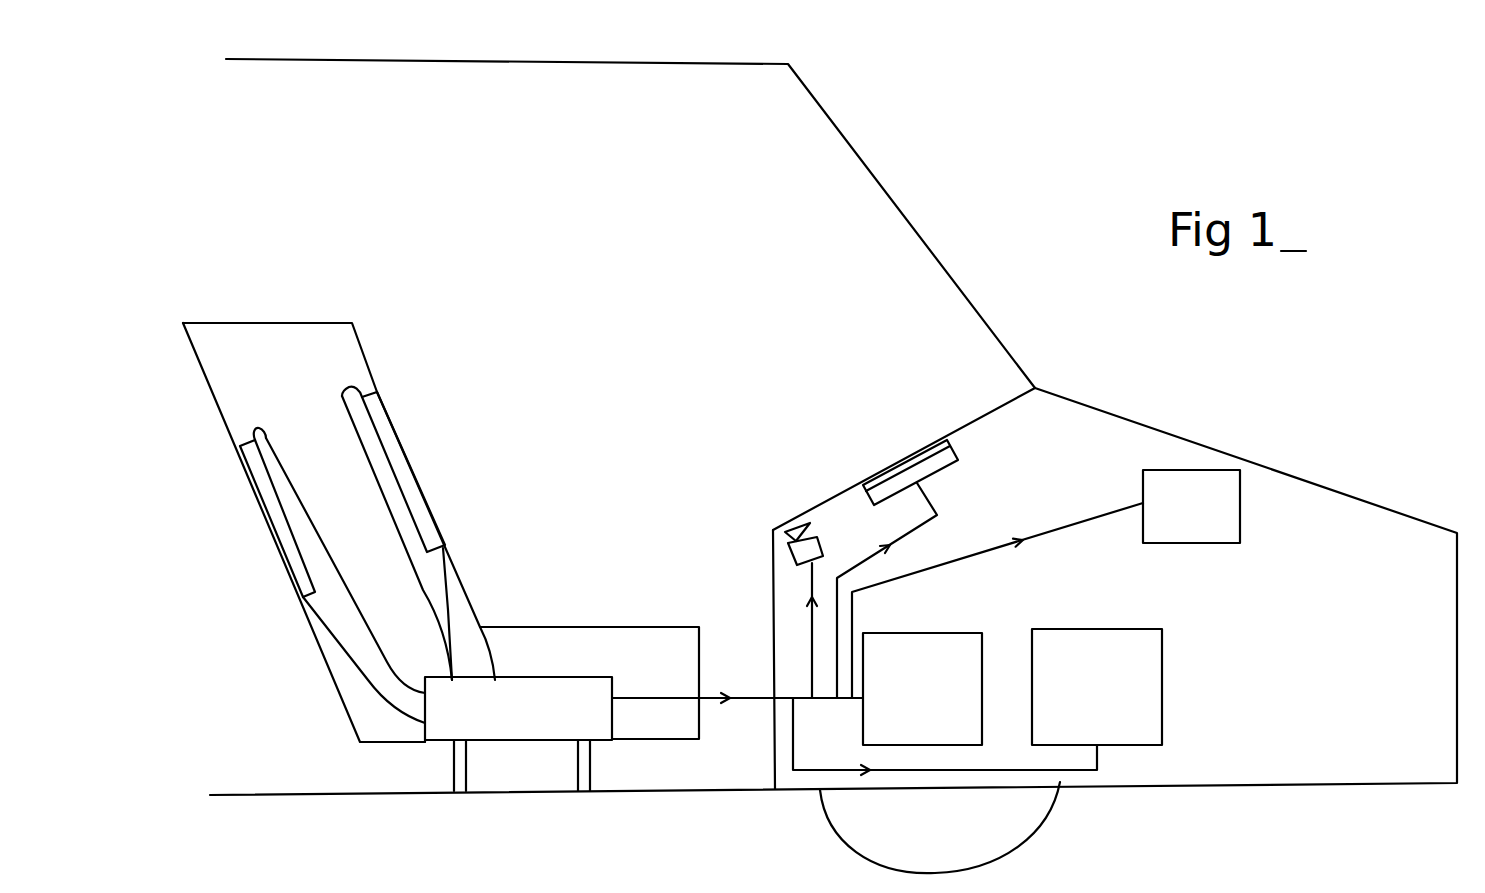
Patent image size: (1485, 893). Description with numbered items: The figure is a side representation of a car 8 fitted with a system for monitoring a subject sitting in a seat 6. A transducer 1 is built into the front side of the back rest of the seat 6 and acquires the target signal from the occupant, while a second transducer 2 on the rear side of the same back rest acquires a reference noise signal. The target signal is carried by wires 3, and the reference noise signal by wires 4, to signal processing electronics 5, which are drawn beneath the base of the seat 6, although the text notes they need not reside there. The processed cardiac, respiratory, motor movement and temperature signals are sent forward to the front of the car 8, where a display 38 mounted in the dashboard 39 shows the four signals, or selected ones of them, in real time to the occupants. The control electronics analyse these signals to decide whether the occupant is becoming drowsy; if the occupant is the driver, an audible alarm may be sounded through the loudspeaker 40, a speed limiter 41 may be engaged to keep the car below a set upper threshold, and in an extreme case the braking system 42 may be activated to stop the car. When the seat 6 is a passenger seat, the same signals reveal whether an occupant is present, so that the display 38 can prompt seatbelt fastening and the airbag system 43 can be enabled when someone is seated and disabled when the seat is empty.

The transducer 1 is at (400, 460).
The transducer 2 is at (258, 488).
The wires 3 is at (448, 578).
The wires 4 is at (387, 662).
The signal processing electronics 5 is at (507, 723).
The seat 6 is at (489, 500).
The car 8 is at (995, 196).
The display 38 is at (937, 477).
The dashboard 39 is at (987, 410).
The loudspeaker 40 is at (821, 545).
The speed limiter 41 is at (1100, 629).
The braking system 42 is at (1200, 544).
The airbag system 43 is at (982, 668).